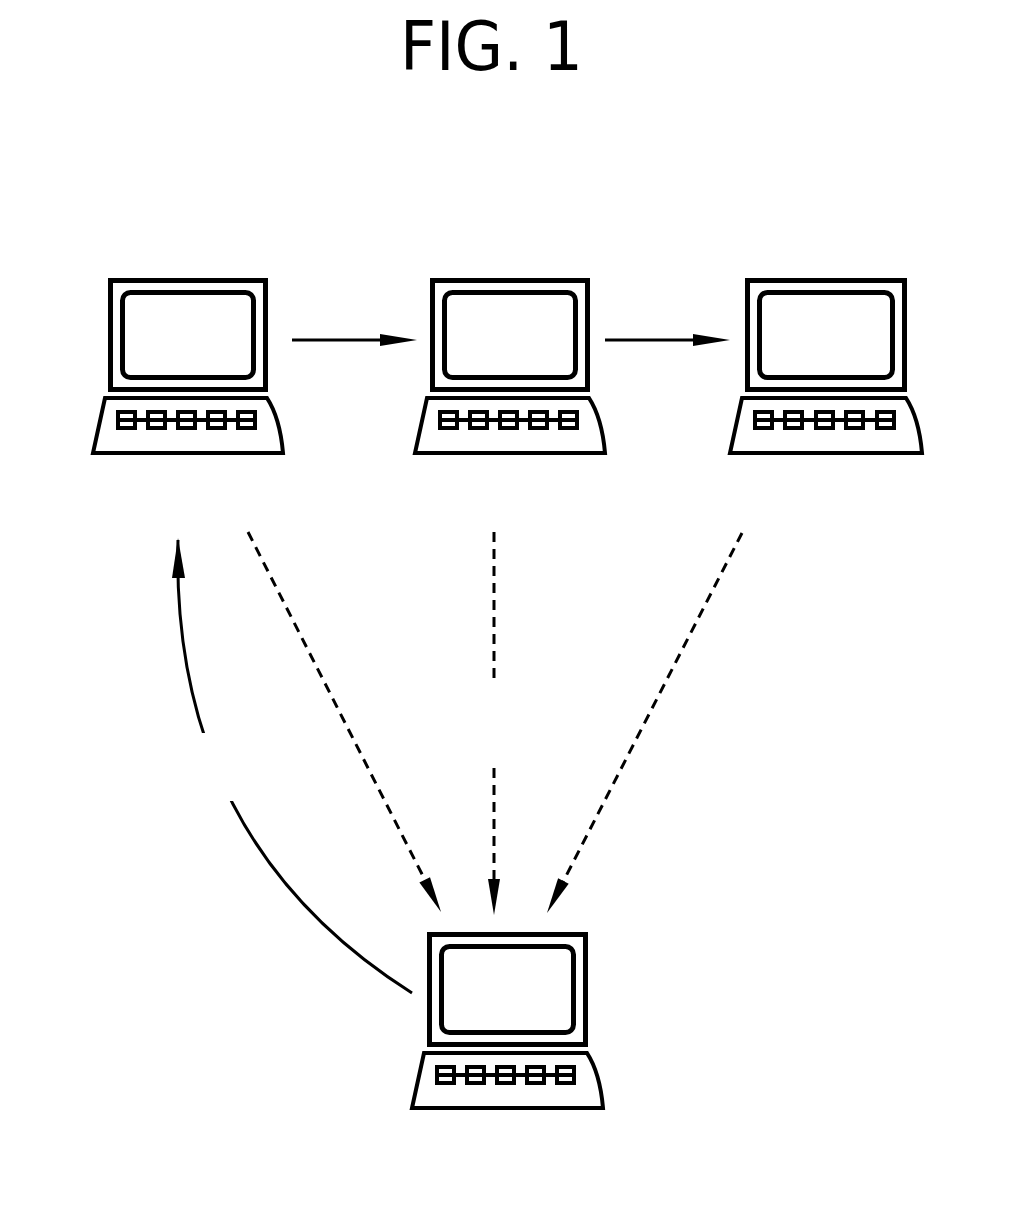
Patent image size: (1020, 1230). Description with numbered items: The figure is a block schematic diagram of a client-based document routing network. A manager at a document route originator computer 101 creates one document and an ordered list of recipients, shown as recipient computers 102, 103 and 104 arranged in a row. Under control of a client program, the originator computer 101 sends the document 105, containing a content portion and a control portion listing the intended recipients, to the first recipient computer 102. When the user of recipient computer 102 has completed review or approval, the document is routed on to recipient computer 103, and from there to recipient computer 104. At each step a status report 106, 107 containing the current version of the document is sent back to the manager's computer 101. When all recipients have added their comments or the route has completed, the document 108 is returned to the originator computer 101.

The document route originator computer 101 is at (435, 1112).
The recipient computer 102 is at (170, 278).
The recipient computer 103 is at (495, 278).
The recipient computer 104 is at (817, 278).
The document 105 is at (185, 677).
The status report 106 is at (313, 665).
The status report from recipient B 107 is at (495, 633).
The document 108 is at (653, 702).